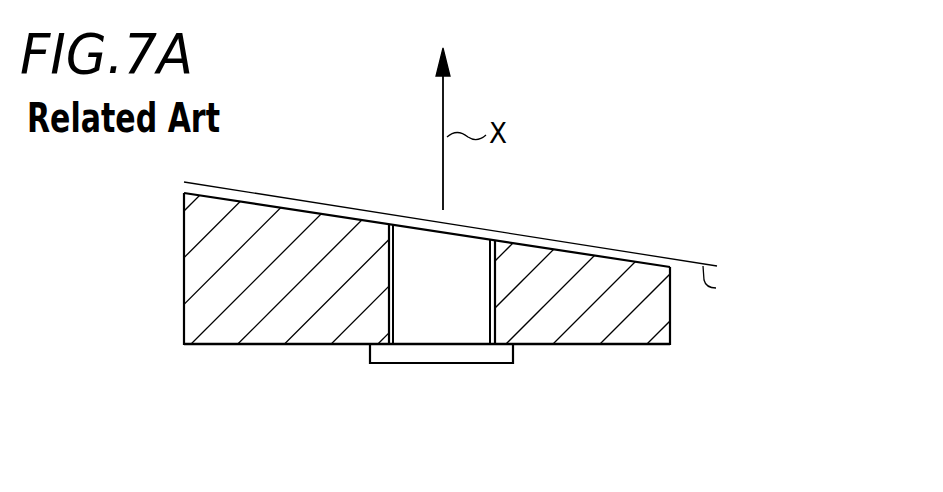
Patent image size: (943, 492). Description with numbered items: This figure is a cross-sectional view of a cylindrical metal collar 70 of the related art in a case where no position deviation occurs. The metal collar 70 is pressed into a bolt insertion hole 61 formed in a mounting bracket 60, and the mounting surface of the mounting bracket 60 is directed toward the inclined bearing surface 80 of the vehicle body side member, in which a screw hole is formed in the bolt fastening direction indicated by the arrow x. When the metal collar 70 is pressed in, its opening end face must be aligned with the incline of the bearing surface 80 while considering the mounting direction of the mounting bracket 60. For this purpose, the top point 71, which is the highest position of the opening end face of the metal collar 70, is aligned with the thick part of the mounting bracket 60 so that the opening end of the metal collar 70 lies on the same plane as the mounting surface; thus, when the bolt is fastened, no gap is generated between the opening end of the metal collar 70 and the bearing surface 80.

The mounting bracket 60 is at (270, 346).
The bolt insertion hole 61 is at (488, 292).
The metal collar 70 is at (432, 390).
The top point 71 is at (393, 222).
The bearing surface 80 is at (722, 286).